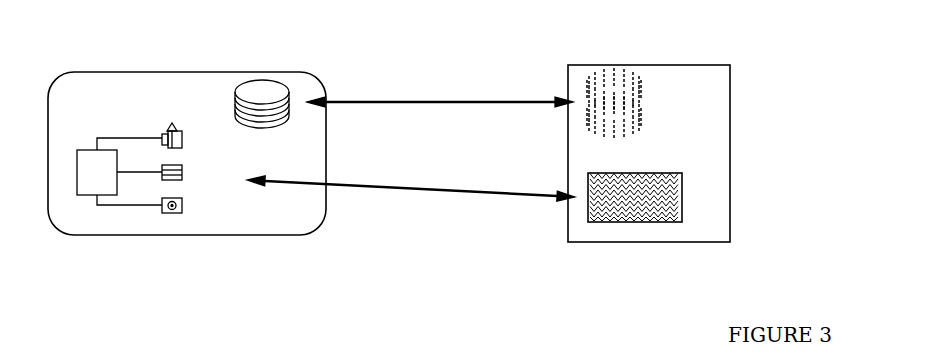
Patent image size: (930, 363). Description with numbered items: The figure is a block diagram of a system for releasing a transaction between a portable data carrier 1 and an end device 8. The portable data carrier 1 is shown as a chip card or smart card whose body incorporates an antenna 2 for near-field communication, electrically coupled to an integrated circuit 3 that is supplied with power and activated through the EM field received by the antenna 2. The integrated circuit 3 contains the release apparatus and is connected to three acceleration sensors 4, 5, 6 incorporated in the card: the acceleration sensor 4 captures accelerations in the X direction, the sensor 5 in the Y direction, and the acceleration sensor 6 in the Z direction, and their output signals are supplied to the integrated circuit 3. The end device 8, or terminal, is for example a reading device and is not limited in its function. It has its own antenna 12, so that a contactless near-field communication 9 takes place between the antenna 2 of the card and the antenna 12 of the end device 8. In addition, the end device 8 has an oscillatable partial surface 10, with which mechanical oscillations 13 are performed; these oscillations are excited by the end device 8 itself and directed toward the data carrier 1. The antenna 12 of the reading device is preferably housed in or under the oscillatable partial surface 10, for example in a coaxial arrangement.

The portable data carrier 1 is at (122, 72).
The antenna 2 is at (265, 82).
The integrated circuit 3 is at (110, 152).
The acceleration sensor 4 is at (183, 130).
The acceleration sensor 5 is at (182, 168).
The acceleration sensor 6 is at (182, 202).
The end device 8 is at (731, 77).
The near-field communication 9 is at (440, 88).
The oscillatable partial surface 10 is at (682, 197).
The antenna 12 is at (598, 82).
The mechanical oscillations 13 is at (411, 202).